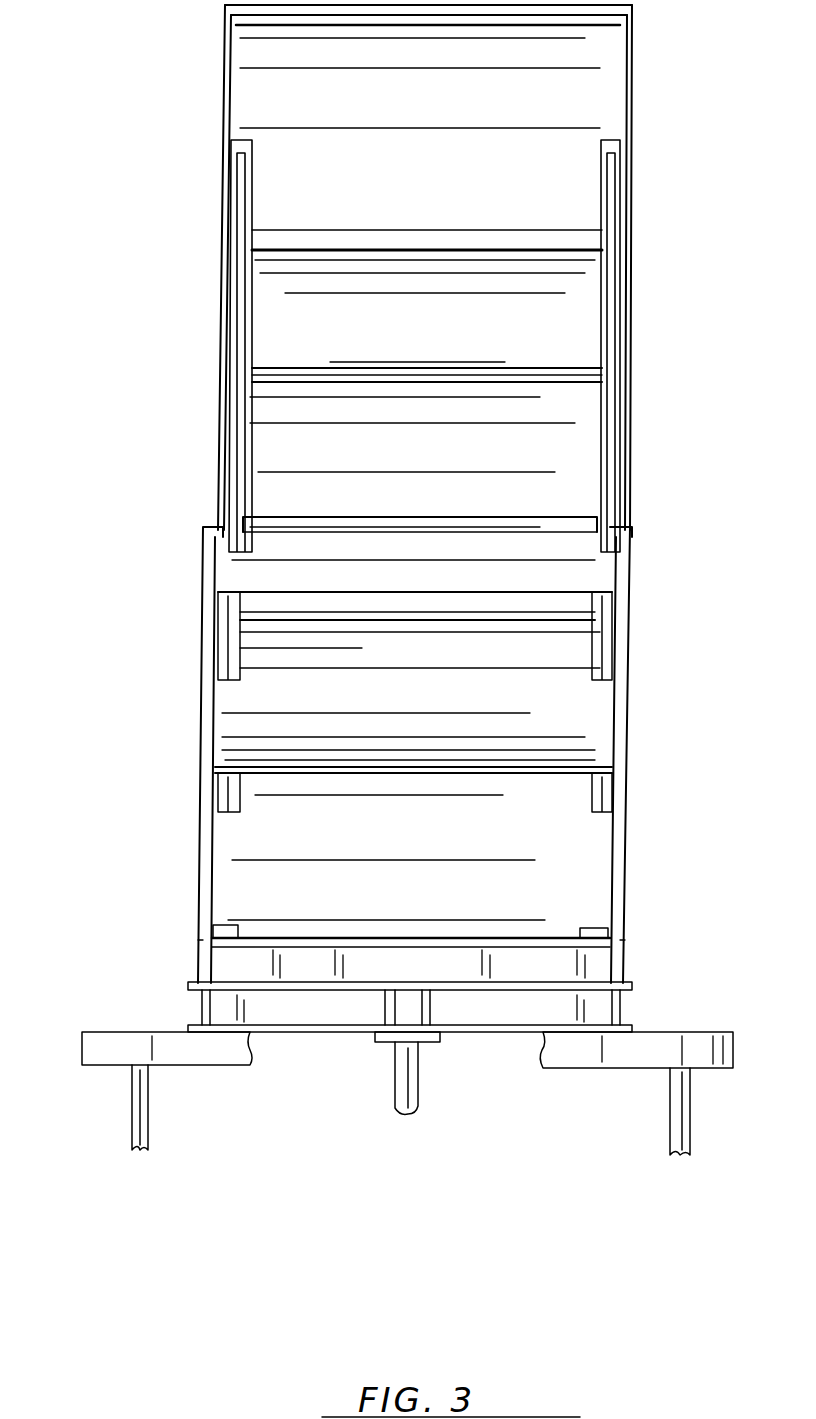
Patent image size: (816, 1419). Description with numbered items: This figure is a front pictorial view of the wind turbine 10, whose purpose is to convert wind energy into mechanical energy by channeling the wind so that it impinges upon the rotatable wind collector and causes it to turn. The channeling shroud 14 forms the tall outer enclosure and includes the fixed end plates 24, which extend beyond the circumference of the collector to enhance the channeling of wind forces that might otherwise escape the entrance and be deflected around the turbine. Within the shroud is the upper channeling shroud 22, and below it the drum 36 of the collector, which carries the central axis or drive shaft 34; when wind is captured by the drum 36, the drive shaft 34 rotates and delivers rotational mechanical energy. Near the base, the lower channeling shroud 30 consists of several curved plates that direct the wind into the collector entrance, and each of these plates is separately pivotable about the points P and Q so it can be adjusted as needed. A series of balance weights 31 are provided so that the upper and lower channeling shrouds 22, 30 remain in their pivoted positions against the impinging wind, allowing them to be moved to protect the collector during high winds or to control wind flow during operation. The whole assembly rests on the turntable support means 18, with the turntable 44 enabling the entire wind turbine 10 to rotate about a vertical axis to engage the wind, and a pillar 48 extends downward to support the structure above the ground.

The wind turbine 10 is at (684, 282).
The channeling shroud 14 is at (228, 76).
The upper channeling shroud 22 is at (410, 229).
The end plates 24 is at (630, 628).
The central axis or drive shaft 34 is at (591, 382).
The drum 36 is at (396, 466).
The lower channeling shroud 30 is at (398, 938).
The balance weights 31 is at (235, 930).
The turntable support means 18 is at (82, 1052).
The turntable 44 is at (698, 1034).
The pillars 48 is at (395, 1108).
The pivot point P is at (200, 943).
The pivot point Q is at (625, 944).